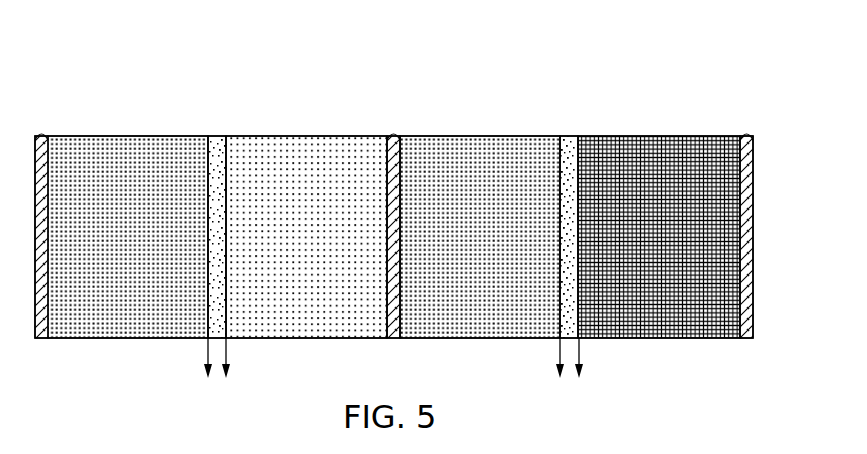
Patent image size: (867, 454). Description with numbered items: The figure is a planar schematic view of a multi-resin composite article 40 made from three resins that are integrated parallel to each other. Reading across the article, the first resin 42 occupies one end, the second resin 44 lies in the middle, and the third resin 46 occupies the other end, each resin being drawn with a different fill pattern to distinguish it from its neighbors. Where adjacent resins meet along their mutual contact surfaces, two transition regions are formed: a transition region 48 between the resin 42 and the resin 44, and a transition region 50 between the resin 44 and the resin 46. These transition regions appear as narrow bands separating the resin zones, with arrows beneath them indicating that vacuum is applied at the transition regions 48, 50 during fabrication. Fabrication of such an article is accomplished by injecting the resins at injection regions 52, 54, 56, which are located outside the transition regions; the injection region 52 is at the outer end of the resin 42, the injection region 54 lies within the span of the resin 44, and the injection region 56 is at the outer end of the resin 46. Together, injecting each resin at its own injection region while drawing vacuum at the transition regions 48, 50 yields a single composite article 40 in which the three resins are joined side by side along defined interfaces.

The multi-resin composite article 40 is at (653, 40).
The first resin 42 is at (92, 150).
The second resin 44 is at (422, 139).
The third resin 46 is at (628, 138).
The transition region 48 is at (213, 312).
The transition region 50 is at (565, 312).
The injection region 52 is at (40, 135).
The injection region 54 is at (393, 334).
The injection region 56 is at (745, 136).